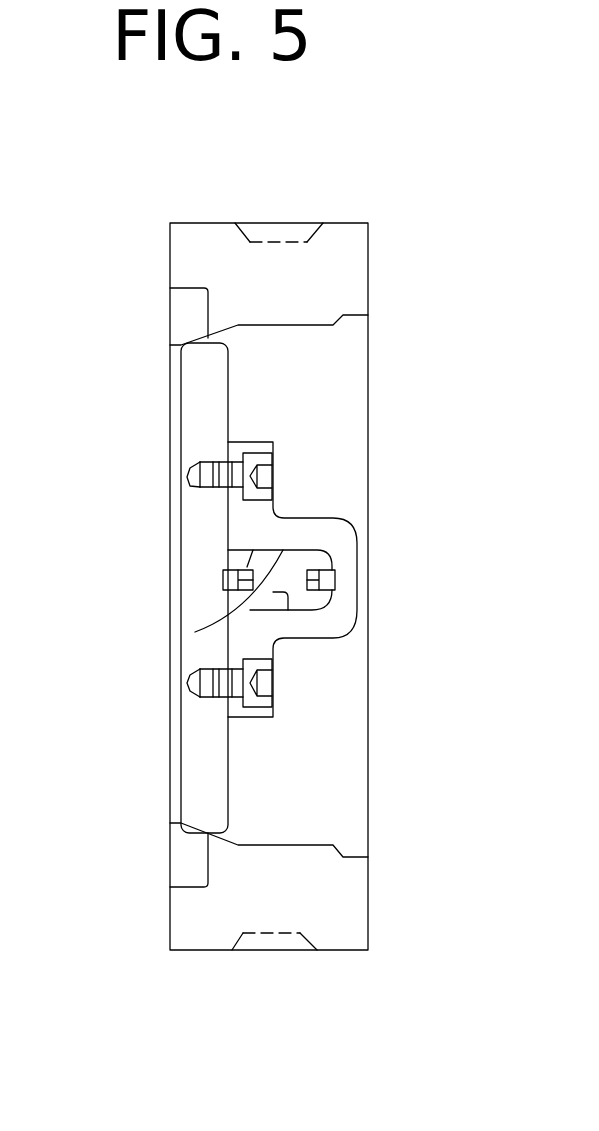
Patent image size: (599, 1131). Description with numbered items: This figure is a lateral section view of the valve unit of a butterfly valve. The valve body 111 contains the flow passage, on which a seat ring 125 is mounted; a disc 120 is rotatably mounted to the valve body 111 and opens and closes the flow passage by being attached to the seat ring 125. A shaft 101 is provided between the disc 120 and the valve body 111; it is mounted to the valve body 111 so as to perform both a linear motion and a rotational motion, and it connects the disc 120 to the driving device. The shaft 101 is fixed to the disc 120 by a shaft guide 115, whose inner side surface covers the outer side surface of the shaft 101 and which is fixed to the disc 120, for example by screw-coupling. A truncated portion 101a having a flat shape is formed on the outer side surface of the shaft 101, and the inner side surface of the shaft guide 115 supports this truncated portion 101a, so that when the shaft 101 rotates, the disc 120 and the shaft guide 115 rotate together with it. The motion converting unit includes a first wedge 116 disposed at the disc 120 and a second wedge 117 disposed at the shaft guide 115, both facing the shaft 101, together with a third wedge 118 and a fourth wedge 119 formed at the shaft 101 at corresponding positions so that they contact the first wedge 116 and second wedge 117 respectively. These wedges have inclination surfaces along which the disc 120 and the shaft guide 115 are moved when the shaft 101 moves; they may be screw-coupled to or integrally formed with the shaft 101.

The valve body 111 is at (188, 255).
The seat ring 125 is at (185, 320).
The disc 120 is at (200, 410).
The shaft 101 is at (298, 597).
The shaft guide 115 is at (293, 533).
The first wedge 116 is at (223, 572).
The second wedge 117 is at (333, 574).
The third wedge 118 is at (223, 585).
The fourth wedge 119 is at (331, 592).
The truncated portion 101a is at (273, 592).